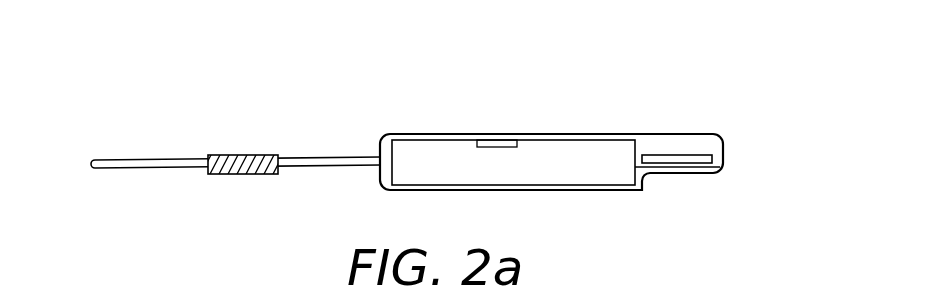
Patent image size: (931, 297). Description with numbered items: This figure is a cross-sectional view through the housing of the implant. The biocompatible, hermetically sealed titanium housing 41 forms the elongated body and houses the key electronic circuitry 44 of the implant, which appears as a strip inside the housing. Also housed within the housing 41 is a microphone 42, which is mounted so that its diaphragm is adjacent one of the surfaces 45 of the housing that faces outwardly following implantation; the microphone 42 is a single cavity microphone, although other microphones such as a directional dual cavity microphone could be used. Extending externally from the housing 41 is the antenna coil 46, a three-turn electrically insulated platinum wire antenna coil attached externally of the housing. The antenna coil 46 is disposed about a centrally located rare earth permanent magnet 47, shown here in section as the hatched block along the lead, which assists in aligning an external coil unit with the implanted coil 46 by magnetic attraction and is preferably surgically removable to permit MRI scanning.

The housing 41 is at (613, 133).
The microphone 42 is at (487, 140).
The electronic circuitry 44 is at (675, 155).
The surface of the housing 45 is at (553, 134).
The antenna coil 46 is at (95, 160).
The rare earth permanent magnet 47 is at (238, 155).